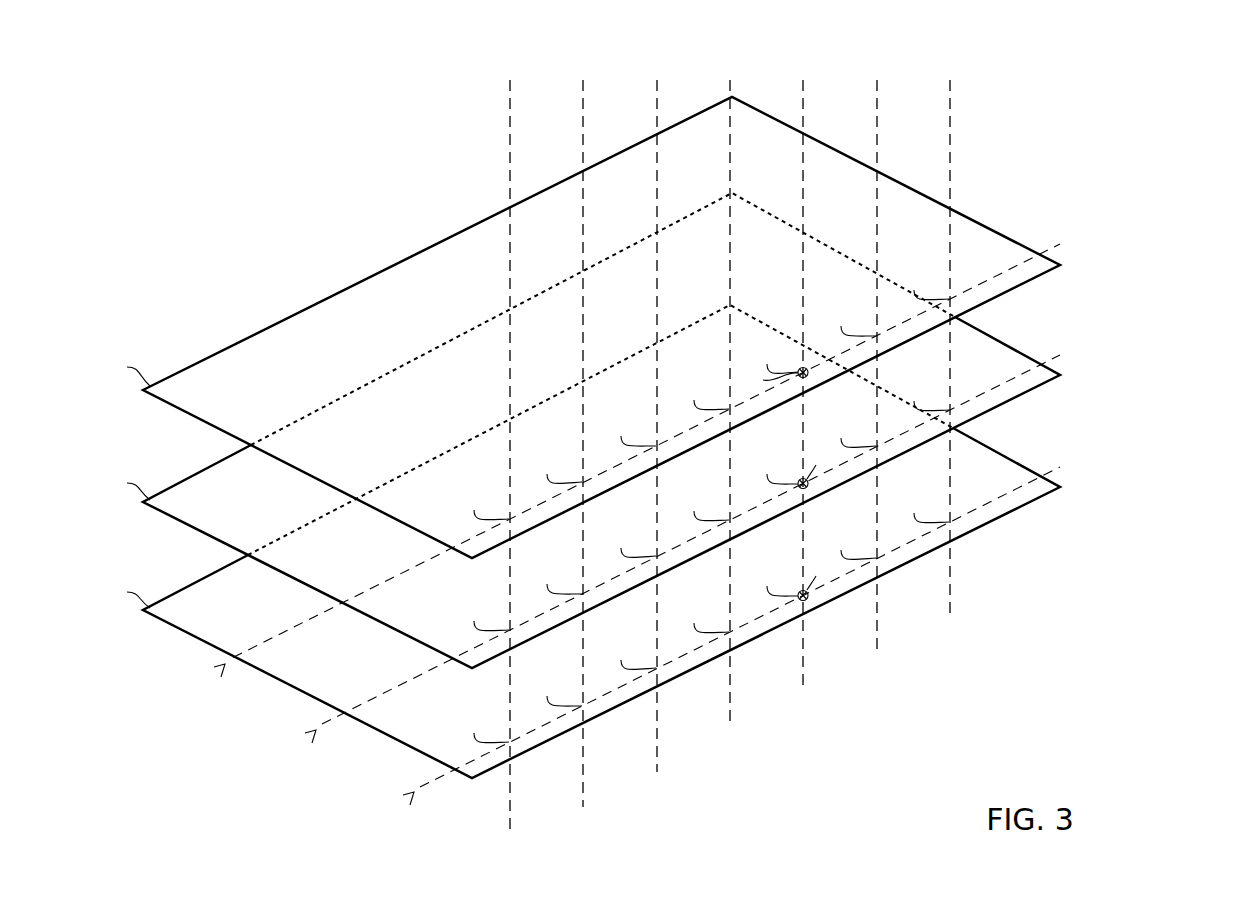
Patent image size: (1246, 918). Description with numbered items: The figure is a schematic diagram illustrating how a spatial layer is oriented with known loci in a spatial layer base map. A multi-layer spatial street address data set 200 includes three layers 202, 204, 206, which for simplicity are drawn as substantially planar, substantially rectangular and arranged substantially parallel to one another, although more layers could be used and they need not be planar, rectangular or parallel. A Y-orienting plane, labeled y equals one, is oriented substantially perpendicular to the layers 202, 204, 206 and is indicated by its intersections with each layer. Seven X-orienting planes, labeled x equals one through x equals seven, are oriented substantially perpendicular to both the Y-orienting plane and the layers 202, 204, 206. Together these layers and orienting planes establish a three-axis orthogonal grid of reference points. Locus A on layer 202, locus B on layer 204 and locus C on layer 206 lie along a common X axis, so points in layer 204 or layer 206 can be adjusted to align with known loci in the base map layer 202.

The multi-layer spatial street address data set 200 is at (1178, 631).
The layer 202 is at (1012, 461).
The layer 204 is at (1020, 354).
The layer 206 is at (985, 226).